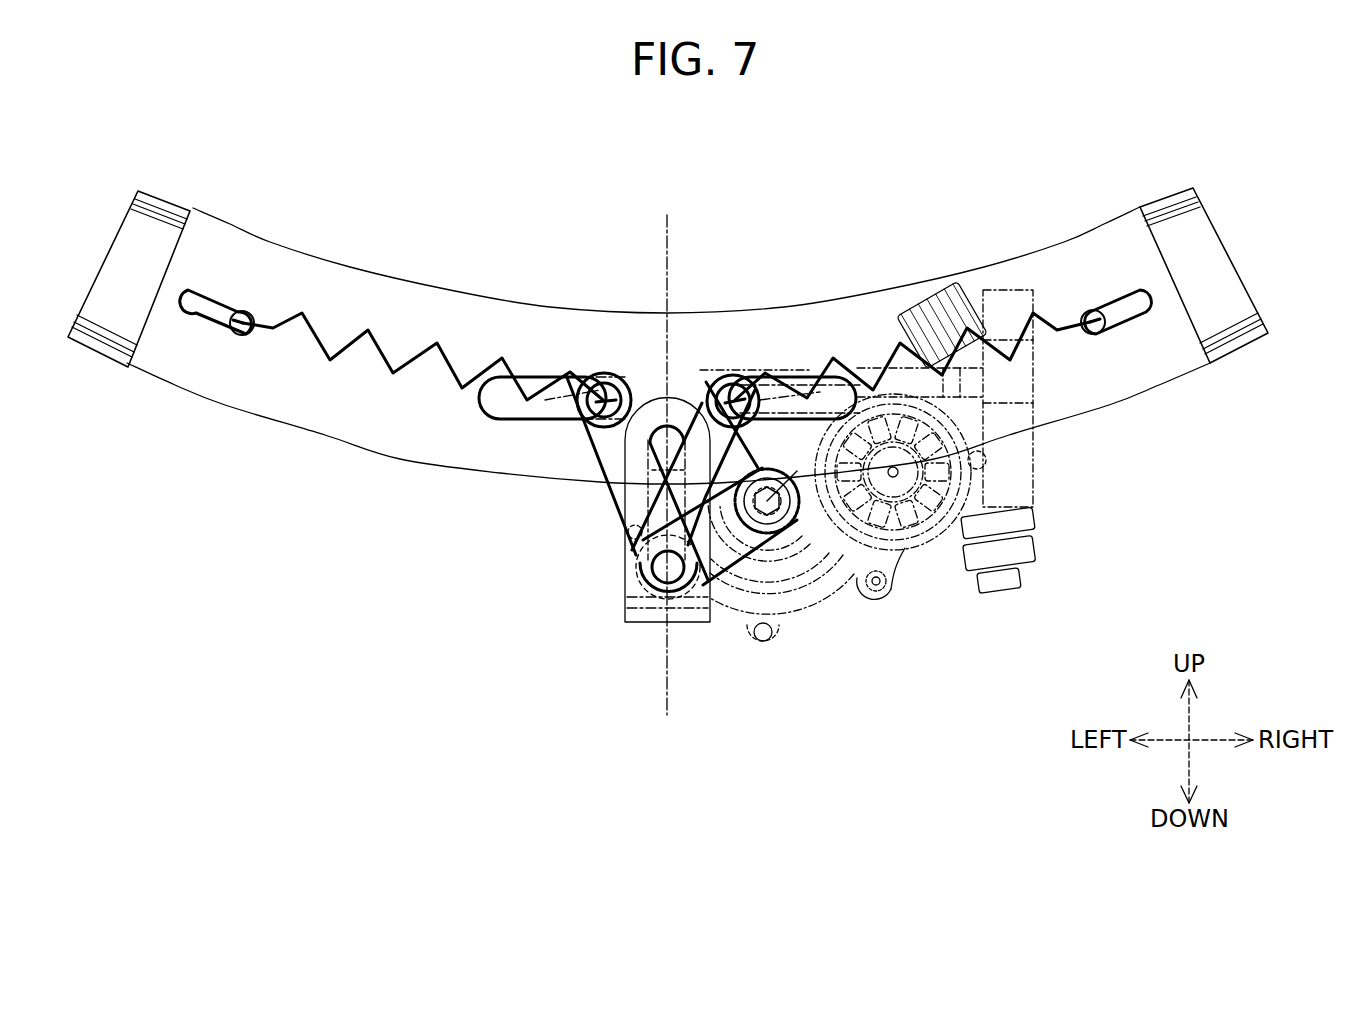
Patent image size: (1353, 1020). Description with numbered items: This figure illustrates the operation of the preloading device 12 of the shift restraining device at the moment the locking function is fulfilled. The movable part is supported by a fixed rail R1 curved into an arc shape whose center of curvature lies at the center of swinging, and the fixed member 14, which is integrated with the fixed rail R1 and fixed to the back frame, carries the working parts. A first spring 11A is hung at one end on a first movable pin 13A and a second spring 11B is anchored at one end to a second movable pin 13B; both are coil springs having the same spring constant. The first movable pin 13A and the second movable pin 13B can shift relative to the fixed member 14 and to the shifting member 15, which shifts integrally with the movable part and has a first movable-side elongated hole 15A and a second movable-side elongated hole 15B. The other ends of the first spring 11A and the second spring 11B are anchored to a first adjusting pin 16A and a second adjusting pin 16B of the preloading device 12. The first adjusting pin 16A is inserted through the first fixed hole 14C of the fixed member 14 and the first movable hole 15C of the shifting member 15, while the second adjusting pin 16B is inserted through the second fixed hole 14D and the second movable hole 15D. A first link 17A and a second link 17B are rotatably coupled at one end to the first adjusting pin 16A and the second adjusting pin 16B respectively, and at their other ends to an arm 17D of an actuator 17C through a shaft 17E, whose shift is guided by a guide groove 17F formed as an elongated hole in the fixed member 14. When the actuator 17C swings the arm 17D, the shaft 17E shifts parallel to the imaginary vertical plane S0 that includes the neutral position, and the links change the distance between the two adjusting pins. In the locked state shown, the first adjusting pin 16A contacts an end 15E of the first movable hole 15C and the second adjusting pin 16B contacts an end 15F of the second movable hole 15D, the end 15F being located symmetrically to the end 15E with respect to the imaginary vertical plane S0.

The first spring 11A is at (331, 365).
The second spring 11B is at (863, 364).
The preloading device 12 is at (905, 623).
The first movable pin 13A is at (239, 323).
The second movable pin 13B is at (1093, 328).
The fixed member 14 is at (643, 627).
The first fixed hole 14C is at (558, 390).
The second fixed hole 14D is at (807, 391).
The shifting member 15 is at (1010, 260).
The first movable-side elongated hole 15A is at (193, 308).
The second movable-side elongated hole 15B is at (1135, 318).
The first movable hole 15C is at (573, 420).
The second movable hole 15D is at (785, 372).
The end of the first movable hole 15E is at (633, 417).
The end of the second movable hole 15F is at (775, 517).
The first adjusting pin 16A is at (593, 448).
The second adjusting pin 16B is at (727, 398).
The first link 17A is at (628, 527).
The second link 17B is at (738, 382).
The actuator 17C is at (897, 588).
The arm 17D is at (780, 530).
The shaft 17E is at (655, 598).
The guide groove 17F is at (674, 430).
The fixed rail R1 is at (1205, 265).
The imaginary vertical plane S0 is at (672, 218).